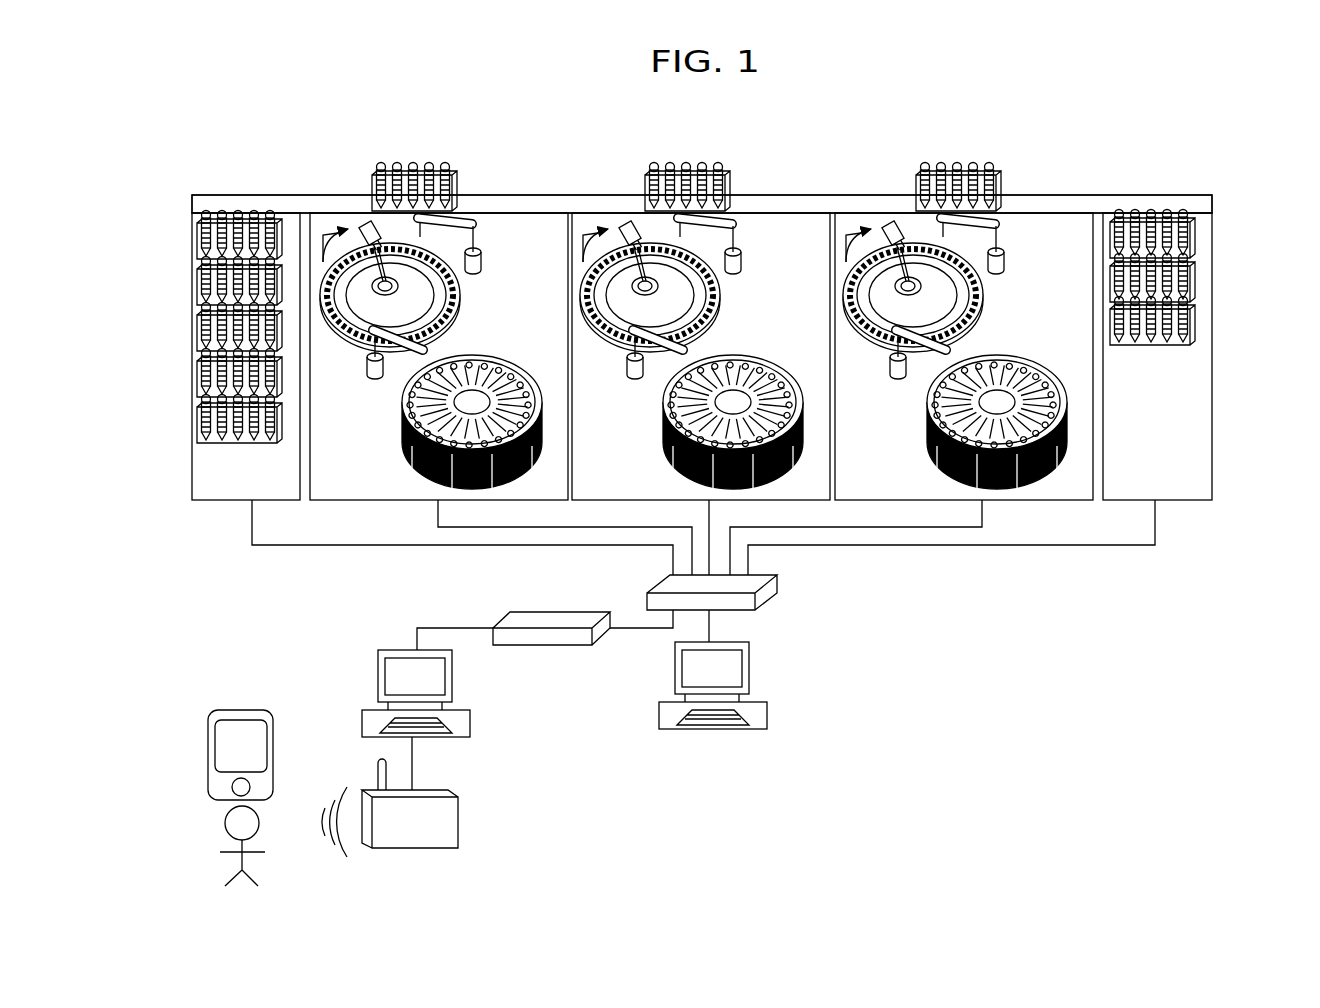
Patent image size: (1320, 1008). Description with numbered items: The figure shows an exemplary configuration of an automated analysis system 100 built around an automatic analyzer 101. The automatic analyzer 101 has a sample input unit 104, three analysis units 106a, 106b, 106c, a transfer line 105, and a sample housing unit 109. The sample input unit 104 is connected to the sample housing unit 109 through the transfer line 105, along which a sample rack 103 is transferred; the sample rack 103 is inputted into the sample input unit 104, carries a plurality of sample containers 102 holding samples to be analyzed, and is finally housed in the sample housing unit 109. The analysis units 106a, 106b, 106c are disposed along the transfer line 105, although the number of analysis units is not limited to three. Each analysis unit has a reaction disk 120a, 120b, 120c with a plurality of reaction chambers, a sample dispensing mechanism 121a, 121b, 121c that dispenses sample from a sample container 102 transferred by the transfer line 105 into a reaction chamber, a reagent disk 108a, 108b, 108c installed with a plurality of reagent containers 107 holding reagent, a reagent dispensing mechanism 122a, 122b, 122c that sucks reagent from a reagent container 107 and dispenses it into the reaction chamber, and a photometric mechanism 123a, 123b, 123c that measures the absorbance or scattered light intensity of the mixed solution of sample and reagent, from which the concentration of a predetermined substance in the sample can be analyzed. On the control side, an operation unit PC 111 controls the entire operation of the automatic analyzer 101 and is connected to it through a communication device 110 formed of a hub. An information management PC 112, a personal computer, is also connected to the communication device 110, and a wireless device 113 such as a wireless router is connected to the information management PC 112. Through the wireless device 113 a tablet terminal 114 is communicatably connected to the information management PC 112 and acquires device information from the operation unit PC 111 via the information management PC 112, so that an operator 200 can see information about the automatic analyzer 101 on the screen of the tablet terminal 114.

The automated analysis system 100 is at (197, 148).
The automatic analyzer 101 is at (1217, 282).
The sample container 102 is at (200, 370).
The sample rack 103 is at (200, 425).
The sample input unit 104 is at (210, 480).
The transfer line 105 is at (200, 203).
The analysis unit 106a is at (545, 228).
The analysis unit 106b is at (804, 228).
The analysis unit 106c is at (1067, 228).
The reagent container 107 is at (425, 505).
The reagent disk 108a is at (399, 420).
The reagent disk 108b is at (659, 420).
The reagent disk 108c is at (924, 420).
The sample housing unit 109 is at (1193, 480).
The communication device 110 is at (777, 580).
The operation unit PC 111 is at (757, 668).
The information management PC 112 is at (458, 672).
The wireless device 113 is at (460, 818).
The tablet terminal 114 is at (208, 738).
The reaction disk 120a is at (462, 335).
The reaction disk 120b is at (722, 335).
The reaction disk 120c is at (989, 335).
The sample dispensing mechanism 121a is at (491, 260).
The sample dispensing mechanism 121b is at (753, 260).
The sample dispensing mechanism 121c is at (1018, 260).
The reagent dispensing mechanism 122a is at (361, 357).
The reagent dispensing mechanism 122b is at (621, 357).
The reagent dispensing mechanism 122c is at (886, 357).
The photometric mechanism 123a is at (346, 222).
The photometric mechanism 123b is at (606, 222).
The photometric mechanism 123c is at (866, 222).
The operator 200 is at (205, 826).